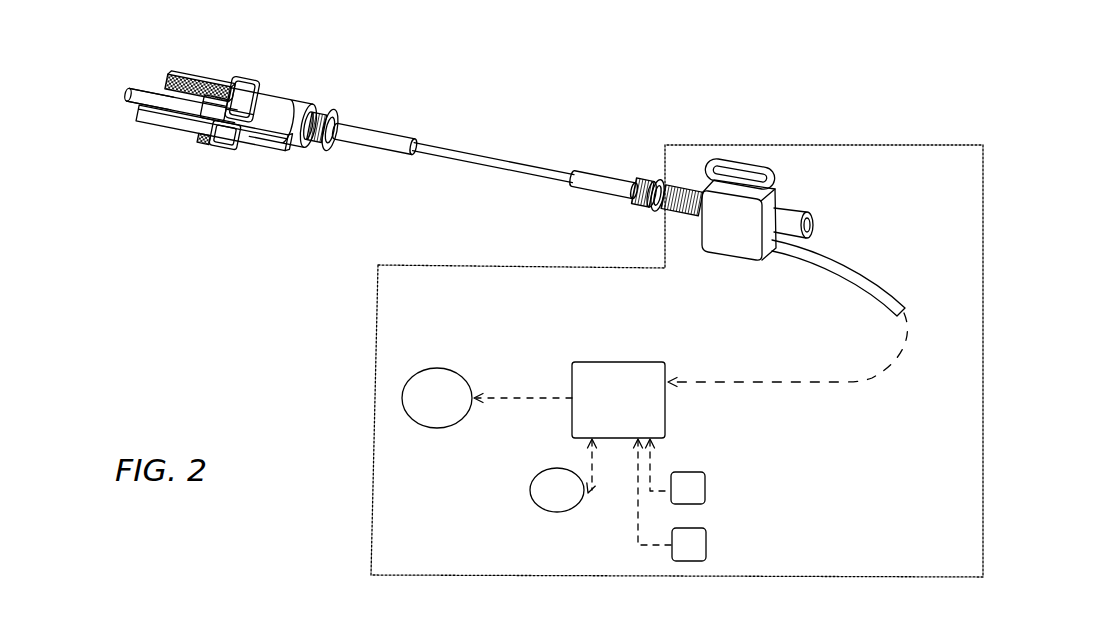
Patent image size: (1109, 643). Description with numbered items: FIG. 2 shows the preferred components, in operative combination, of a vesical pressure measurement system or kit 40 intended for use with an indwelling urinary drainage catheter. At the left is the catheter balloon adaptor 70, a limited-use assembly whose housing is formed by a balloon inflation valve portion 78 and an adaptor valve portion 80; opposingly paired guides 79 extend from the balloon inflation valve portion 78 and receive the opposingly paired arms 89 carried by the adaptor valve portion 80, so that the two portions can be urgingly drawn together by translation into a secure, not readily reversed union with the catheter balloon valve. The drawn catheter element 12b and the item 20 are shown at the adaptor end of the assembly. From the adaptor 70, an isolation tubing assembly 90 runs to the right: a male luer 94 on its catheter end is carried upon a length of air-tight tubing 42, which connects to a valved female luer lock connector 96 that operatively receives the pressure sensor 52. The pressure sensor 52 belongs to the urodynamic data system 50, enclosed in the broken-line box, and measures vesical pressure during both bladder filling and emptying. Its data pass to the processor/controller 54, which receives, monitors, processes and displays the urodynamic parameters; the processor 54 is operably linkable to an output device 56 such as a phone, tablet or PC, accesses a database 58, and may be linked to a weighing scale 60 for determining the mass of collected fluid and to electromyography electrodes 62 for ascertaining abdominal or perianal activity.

The catheter 12b is at (147, 88).
The catheter shaft 20 is at (127, 95).
The vesical pressure measurement system 40 is at (215, 221).
The extension tubing 42 is at (482, 165).
The urodynamic data system 50 is at (374, 319).
The pressure sensor 52 is at (778, 191).
The processor/controller 54 is at (637, 412).
The output device 56 is at (452, 412).
The database 58 is at (568, 501).
The weighing scale 60 is at (705, 483).
The electromyography (EMG) electrodes 62 is at (706, 544).
The catheter balloon adaptor 70 is at (175, 154).
The balloon inflation valve portion 78 is at (250, 80).
The guides 79 is at (226, 141).
The adaptor valve portion 80 is at (308, 96).
The arms 89 is at (190, 73).
The isolation tubing assembly 90 is at (510, 147).
The male luer 94 is at (328, 148).
The valved female luer lock connector 96 is at (642, 212).